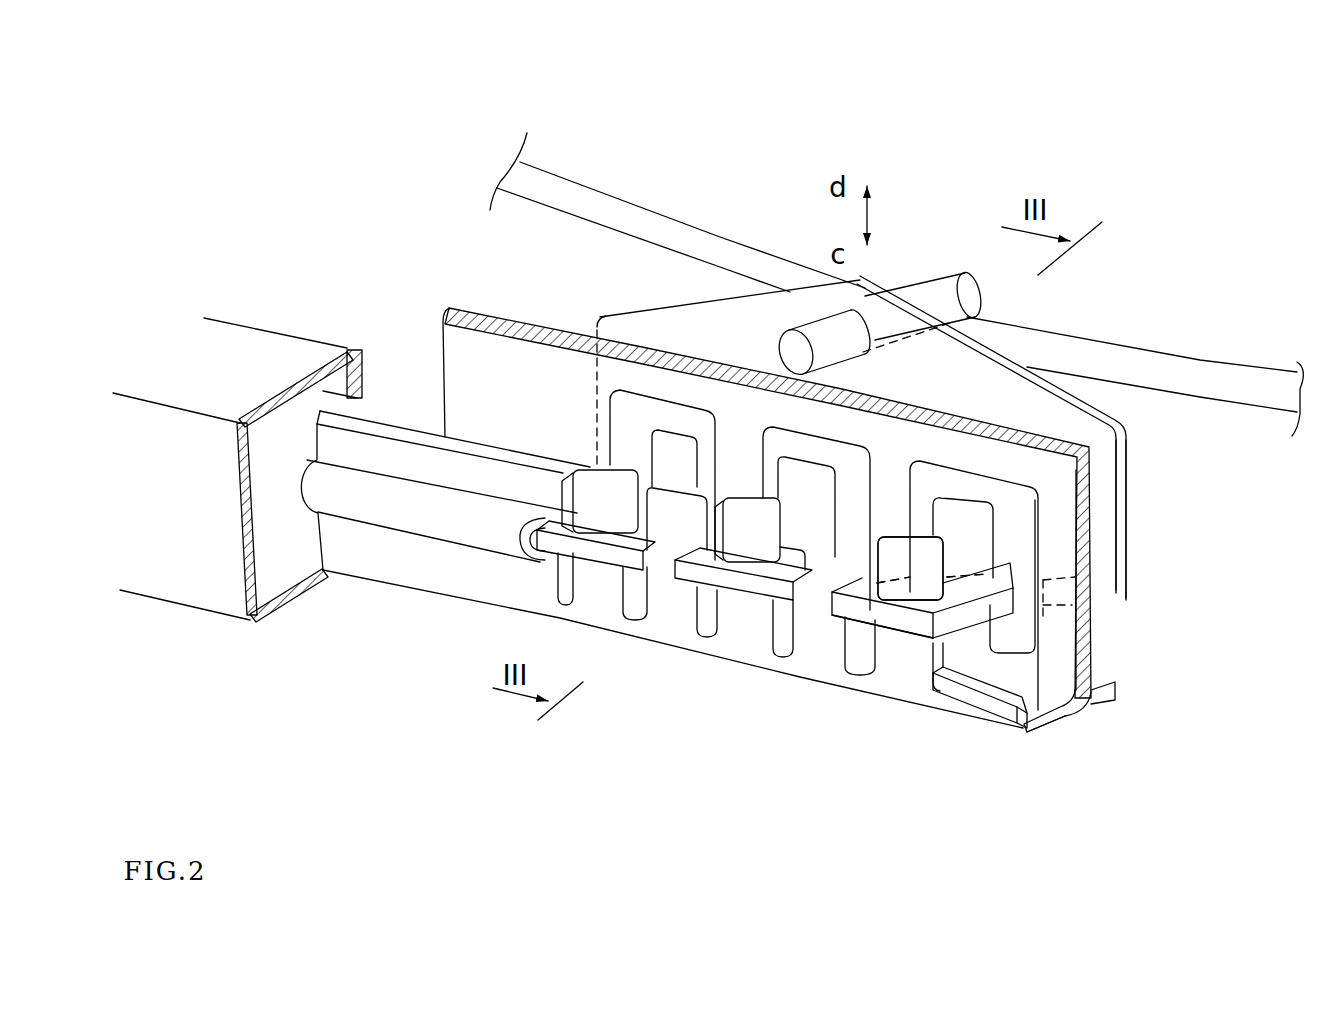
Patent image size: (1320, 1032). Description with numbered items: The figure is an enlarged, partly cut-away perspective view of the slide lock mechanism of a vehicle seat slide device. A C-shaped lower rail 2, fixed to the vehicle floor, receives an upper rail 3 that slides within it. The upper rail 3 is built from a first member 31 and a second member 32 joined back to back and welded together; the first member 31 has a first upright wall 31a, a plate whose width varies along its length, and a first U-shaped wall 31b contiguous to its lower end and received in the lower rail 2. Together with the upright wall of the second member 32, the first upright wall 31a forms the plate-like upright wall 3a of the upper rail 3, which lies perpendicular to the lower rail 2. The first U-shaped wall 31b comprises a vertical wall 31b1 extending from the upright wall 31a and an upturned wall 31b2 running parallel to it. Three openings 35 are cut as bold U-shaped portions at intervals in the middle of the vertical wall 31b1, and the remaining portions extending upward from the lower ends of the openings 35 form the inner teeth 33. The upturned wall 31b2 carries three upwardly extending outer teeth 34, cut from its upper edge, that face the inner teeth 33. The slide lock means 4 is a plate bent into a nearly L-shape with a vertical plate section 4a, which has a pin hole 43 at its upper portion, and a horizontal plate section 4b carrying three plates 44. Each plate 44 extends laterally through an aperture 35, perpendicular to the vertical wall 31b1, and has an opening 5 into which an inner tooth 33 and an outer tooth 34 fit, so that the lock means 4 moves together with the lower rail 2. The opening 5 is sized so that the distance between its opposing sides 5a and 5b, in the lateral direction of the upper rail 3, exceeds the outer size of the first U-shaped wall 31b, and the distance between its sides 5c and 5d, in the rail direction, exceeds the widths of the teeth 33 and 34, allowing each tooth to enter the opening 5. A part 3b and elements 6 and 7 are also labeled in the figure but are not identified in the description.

The lower rail 2 is at (227, 384).
The upper rail 3 is at (1054, 735).
The upright wall 3a is at (1092, 537).
The bottom wall of housing 3b is at (1058, 688).
The first member 31 is at (1062, 714).
The first upright wall 31a is at (465, 378).
The first U-shaped wall 31b is at (455, 561).
The vertical wall 31b1 is at (1057, 637).
The upturned wall 31b2 is at (712, 637).
The second member 32 is at (1104, 678).
The inner tooth 33 is at (667, 470).
The outer teeth 34 is at (600, 577).
The aperture 35 is at (763, 420).
The slide lock means 4 is at (1015, 404).
The vertical plate section 4a is at (1102, 448).
The horizontal plate section 4b is at (1005, 565).
The pin hole 43 is at (867, 323).
The plate 44 is at (543, 562).
The opening 5 is at (765, 565).
The side of opening 5a is at (948, 640).
The side of opening 5b is at (933, 640).
The side of opening 5c is at (895, 640).
The side of opening 5d is at (977, 600).
The fuse 6 is at (813, 325).
The bus bar 7 is at (660, 227).